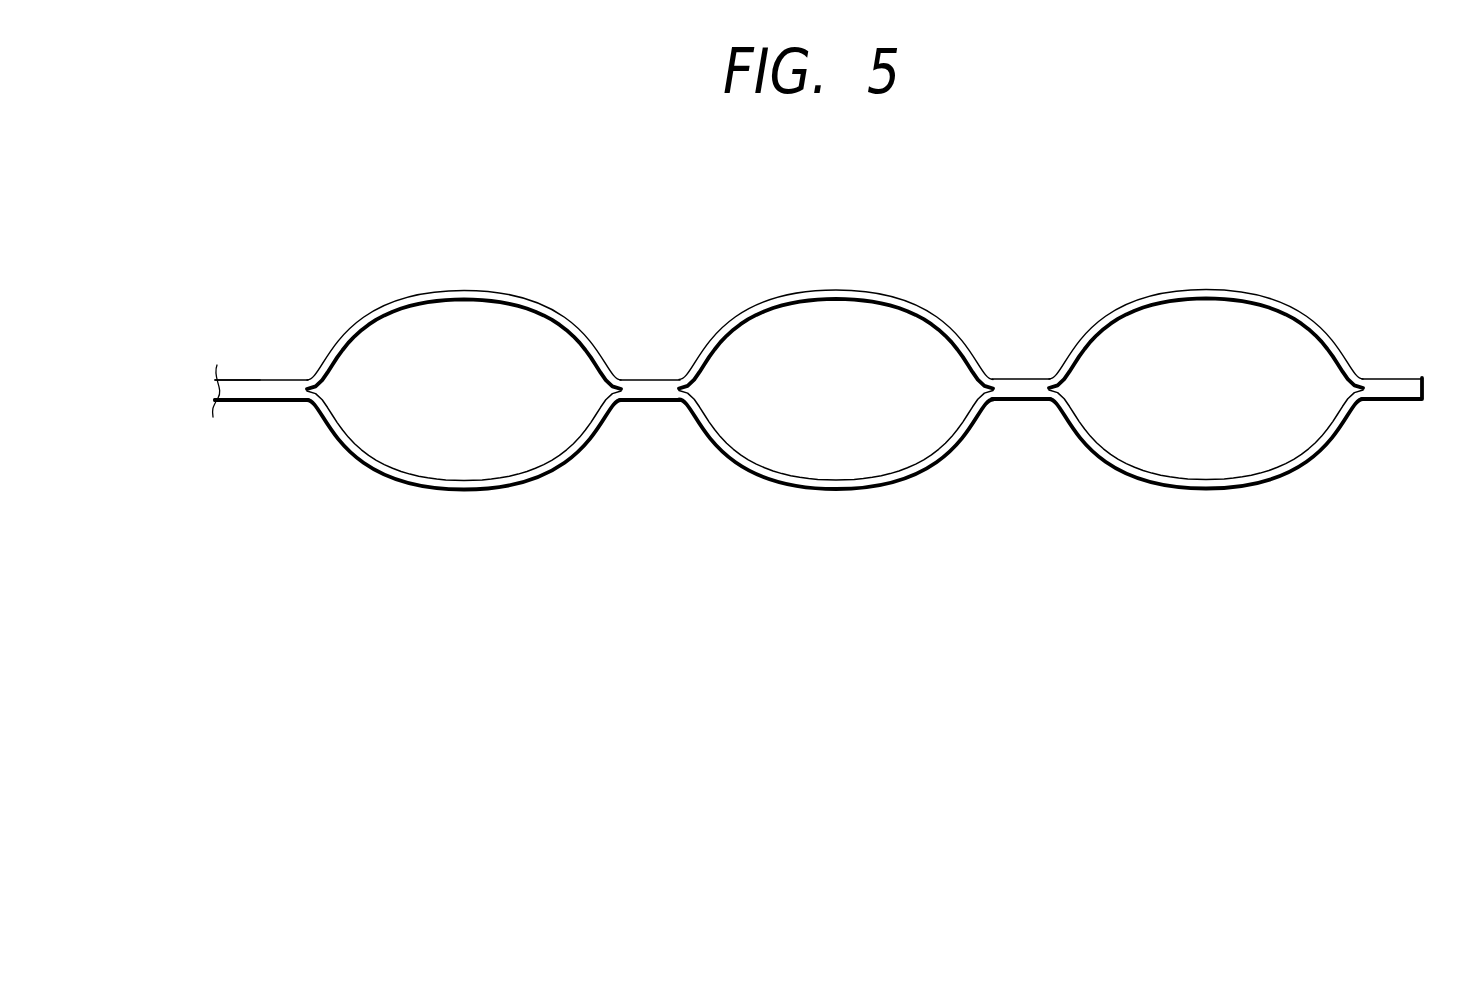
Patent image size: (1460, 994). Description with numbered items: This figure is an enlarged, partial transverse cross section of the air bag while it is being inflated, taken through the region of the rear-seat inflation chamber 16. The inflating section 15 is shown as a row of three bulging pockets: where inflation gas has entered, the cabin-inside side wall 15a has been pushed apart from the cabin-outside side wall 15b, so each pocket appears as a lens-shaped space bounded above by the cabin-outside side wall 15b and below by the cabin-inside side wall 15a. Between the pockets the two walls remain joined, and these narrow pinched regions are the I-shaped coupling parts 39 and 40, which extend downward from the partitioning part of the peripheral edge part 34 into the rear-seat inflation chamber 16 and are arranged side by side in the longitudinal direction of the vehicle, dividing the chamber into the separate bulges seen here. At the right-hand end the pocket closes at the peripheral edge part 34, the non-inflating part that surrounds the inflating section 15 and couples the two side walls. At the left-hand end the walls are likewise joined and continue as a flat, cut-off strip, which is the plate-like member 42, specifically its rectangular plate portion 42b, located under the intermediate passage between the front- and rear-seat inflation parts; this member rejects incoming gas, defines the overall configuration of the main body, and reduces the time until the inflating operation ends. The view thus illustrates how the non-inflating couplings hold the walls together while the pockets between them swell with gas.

The inflating section 15 is at (794, 461).
The rear-seat inflation chamber 16 is at (794, 461).
The cabin-inside side wall 15a is at (468, 487).
The cabin-outside side wall 15b is at (471, 291).
The peripheral edge part 34 is at (1394, 386).
The coupling part 39 is at (651, 396).
The coupling part 40 is at (1030, 400).
The plate-like member 42 is at (201, 464).
The rectangular plate portion 42b is at (232, 402).